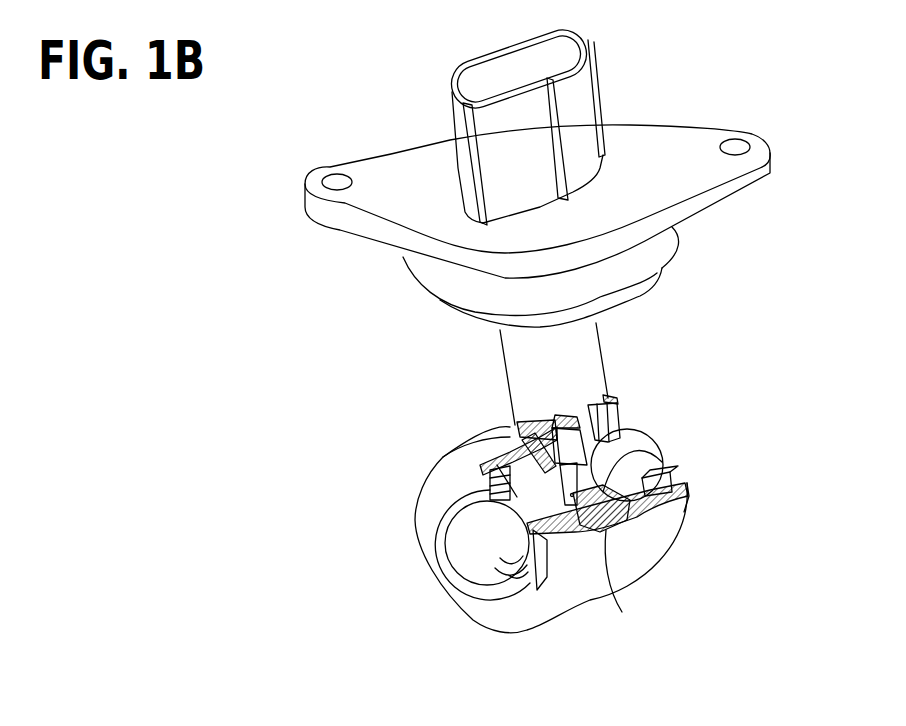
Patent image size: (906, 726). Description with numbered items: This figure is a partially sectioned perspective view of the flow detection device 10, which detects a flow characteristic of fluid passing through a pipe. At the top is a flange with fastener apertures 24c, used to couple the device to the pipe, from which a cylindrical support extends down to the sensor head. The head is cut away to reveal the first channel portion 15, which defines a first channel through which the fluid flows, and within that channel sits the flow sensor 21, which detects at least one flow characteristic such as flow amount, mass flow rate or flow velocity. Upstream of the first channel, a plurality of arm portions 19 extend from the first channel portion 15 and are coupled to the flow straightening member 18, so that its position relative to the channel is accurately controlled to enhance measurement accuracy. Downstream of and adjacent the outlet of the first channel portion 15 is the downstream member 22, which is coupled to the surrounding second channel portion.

The flow detection device 10 is at (612, 120).
The fastener apertures 24c is at (336, 180).
The first channel portion 15 is at (513, 447).
The flow straightening member 18 is at (467, 558).
The arm portions 19 is at (490, 470).
The flow sensor 21 is at (620, 460).
The downstream member 22 is at (652, 453).